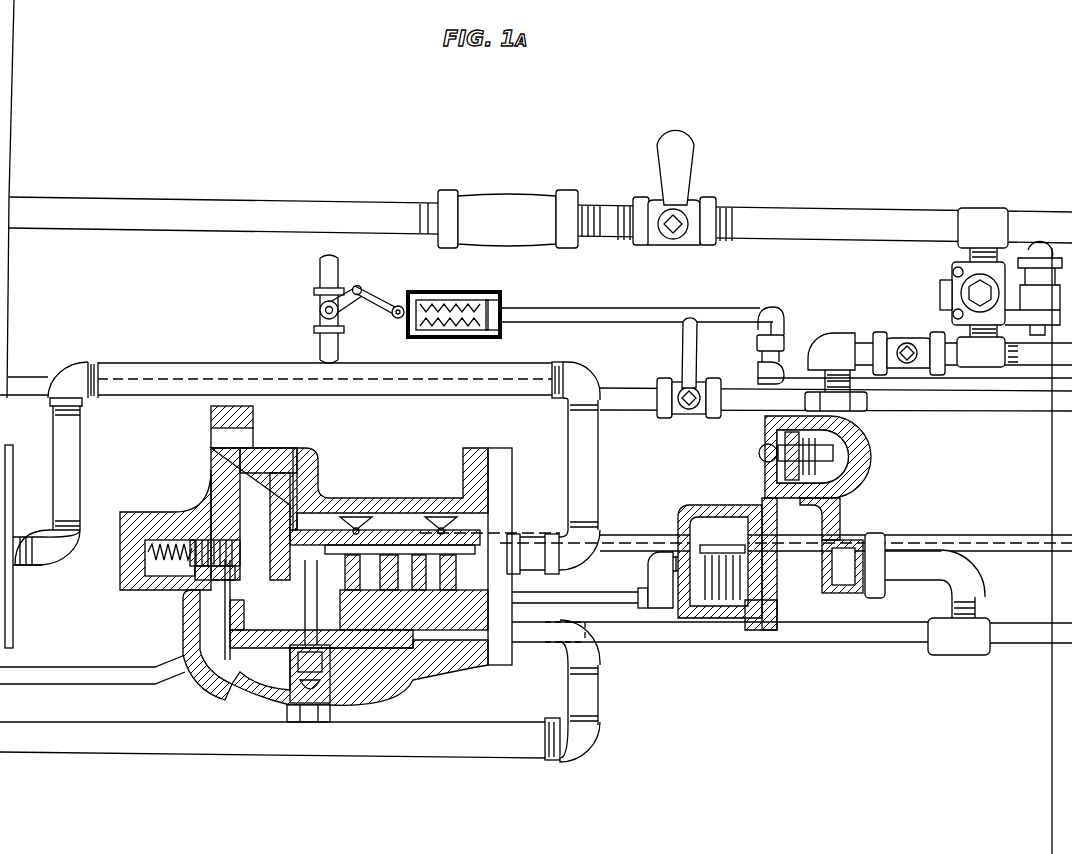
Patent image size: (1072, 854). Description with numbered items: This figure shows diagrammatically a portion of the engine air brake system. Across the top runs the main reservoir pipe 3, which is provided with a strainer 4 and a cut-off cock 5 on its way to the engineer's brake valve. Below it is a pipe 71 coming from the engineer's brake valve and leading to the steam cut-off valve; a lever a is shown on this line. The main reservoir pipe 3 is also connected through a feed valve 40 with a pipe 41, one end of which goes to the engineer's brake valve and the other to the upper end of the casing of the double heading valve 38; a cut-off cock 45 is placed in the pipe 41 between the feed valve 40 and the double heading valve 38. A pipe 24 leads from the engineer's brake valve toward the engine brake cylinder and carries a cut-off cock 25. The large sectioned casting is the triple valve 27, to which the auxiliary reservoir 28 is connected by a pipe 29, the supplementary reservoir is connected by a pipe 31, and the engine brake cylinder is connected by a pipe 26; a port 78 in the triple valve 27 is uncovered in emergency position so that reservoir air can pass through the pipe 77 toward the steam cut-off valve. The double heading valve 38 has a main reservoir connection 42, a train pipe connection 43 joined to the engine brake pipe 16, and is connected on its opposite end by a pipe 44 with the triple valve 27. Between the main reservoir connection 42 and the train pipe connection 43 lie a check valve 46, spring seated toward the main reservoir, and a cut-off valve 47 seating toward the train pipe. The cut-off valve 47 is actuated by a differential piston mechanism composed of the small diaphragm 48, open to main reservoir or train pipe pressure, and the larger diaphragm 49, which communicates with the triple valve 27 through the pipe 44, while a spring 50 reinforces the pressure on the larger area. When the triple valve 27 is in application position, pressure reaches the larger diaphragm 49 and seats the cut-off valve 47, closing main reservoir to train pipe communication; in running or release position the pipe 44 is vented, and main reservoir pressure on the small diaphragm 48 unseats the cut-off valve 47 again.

The main reservoir pipe 3 is at (245, 221).
The strainer 4 is at (510, 219).
The cut-off cock 5 is at (708, 204).
The lever arm a is at (318, 310).
The pipe to steam cut-off valve 71 is at (630, 305).
The feed valve 40 is at (955, 272).
The pipe 41 is at (1033, 302).
The main reservoir connection 42 is at (823, 385).
The cut-off cock 45 is at (920, 396).
The brake cylinder pipe 24 is at (38, 384).
The cut-off cock 25 is at (716, 382).
The pipe 29 is at (522, 376).
The auxiliary reservoir 28 is at (12, 462).
The triple valve 27 is at (328, 446).
The check valve 46 is at (826, 453).
The small diaphragm 48 is at (800, 545).
The cut-off valve 47 is at (853, 565).
The train pipe connection 43 is at (935, 585).
The pipe 77 is at (630, 545).
The pipe 44 is at (606, 597).
The larger diaphragm 49 is at (740, 531).
The spring 50 is at (722, 577).
The double heading valve 38 is at (718, 622).
The engine brake pipe 16 is at (933, 636).
The pipe 31 is at (98, 677).
The port 78 is at (414, 572).
The pipe 26 is at (300, 691).